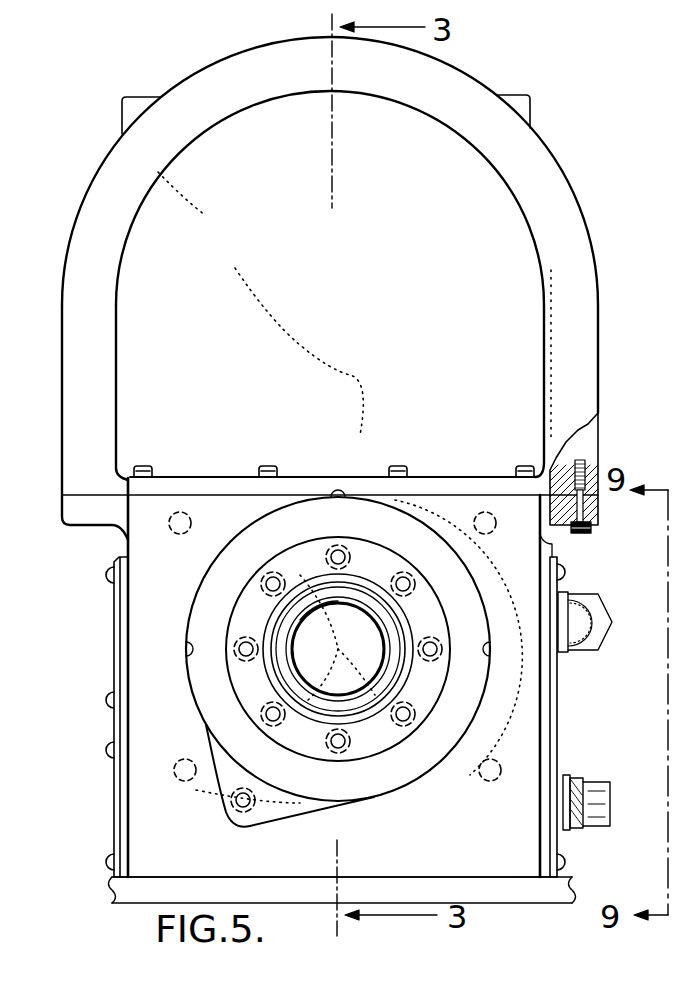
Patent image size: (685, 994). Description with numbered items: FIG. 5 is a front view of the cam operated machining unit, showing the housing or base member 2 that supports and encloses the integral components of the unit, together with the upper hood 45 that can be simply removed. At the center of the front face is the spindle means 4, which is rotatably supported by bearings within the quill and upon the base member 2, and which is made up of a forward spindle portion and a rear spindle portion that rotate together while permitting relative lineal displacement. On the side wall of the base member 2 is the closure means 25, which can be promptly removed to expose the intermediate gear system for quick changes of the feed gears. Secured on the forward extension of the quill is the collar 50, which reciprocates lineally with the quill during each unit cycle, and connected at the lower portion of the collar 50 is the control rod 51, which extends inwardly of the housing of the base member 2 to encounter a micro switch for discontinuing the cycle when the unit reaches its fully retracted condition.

The base member 2 is at (128, 893).
The spindle means 4 is at (384, 681).
The closure means 25 is at (557, 690).
The upper hood 45 is at (548, 150).
The collar 50 is at (304, 797).
The control rod 51 is at (233, 806).